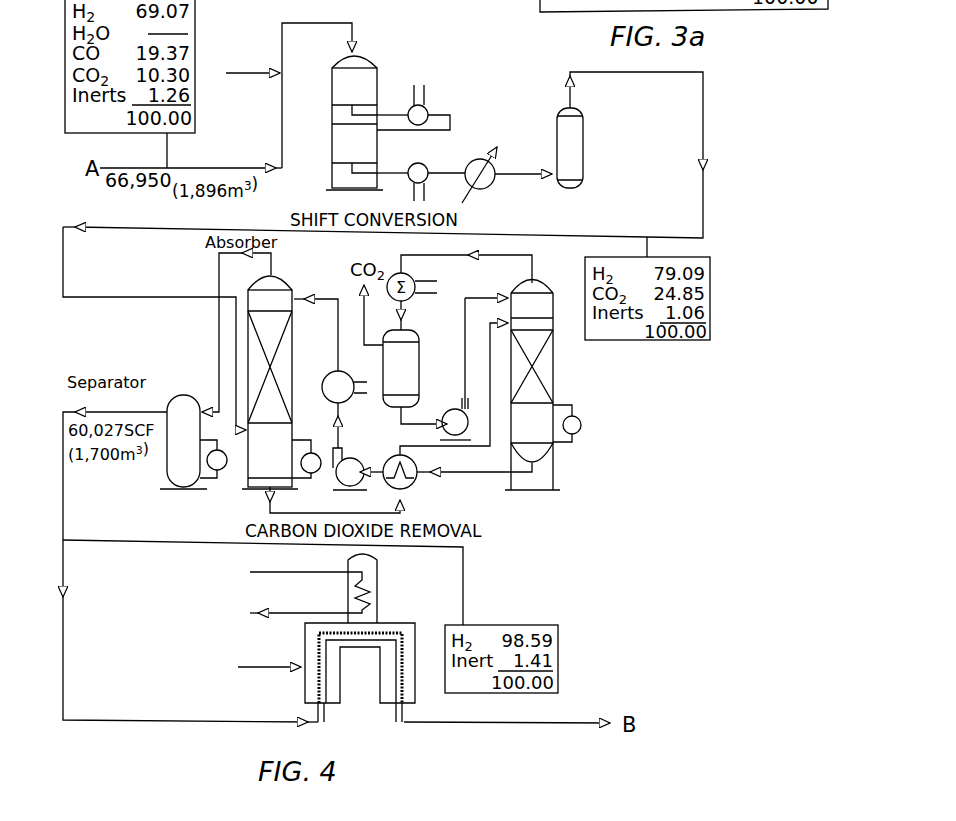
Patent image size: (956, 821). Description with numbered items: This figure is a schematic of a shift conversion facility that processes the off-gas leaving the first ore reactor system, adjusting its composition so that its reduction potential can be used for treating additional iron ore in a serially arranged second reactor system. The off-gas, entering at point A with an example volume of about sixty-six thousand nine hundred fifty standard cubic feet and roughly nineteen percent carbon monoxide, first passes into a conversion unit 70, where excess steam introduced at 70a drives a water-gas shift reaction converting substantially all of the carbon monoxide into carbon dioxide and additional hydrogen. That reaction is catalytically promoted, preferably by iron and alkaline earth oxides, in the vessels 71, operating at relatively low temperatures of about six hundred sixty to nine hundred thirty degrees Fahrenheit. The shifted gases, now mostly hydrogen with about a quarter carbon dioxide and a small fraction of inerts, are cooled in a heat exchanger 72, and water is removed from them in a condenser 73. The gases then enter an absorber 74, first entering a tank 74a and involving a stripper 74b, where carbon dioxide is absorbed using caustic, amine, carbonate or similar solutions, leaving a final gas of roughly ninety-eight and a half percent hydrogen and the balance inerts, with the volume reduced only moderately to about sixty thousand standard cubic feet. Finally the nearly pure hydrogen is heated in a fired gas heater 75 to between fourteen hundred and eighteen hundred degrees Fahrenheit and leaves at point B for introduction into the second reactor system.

The conversion unit 70 is at (452, 80).
The steam introduction point 70a is at (248, 78).
The catalyst vessels 71 is at (380, 100).
The heat exchanger 72 is at (470, 153).
The condenser 73 is at (574, 146).
The absorber 74 is at (585, 403).
The tank 74a is at (298, 375).
The stripper 74b is at (555, 446).
The fired gas heater 75 is at (424, 608).